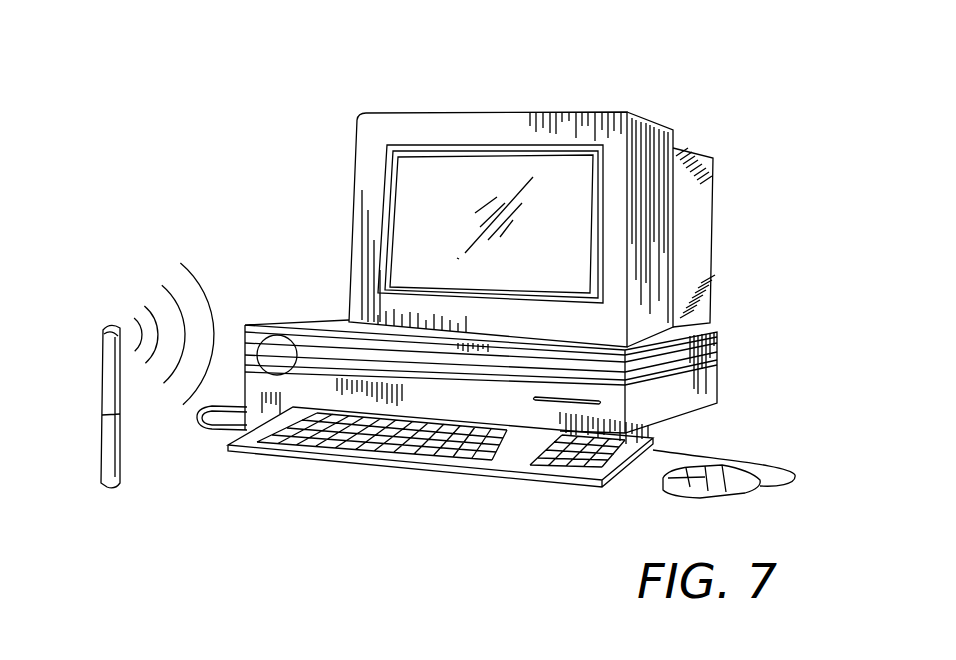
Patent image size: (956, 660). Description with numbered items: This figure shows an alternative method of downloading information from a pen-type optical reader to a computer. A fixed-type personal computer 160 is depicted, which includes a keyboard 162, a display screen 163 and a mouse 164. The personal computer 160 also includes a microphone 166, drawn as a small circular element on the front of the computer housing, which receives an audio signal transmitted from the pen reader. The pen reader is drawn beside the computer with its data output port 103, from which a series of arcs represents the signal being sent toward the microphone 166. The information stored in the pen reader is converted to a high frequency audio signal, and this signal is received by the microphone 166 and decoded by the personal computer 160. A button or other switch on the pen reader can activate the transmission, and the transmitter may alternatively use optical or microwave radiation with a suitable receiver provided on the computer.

The fixed-type personal computer 160 is at (694, 136).
The display screen 163 is at (713, 240).
The microphone 166 is at (281, 314).
The keyboard 162 is at (527, 490).
The mouse 164 is at (733, 452).
The pen reader data output port 103 is at (111, 327).